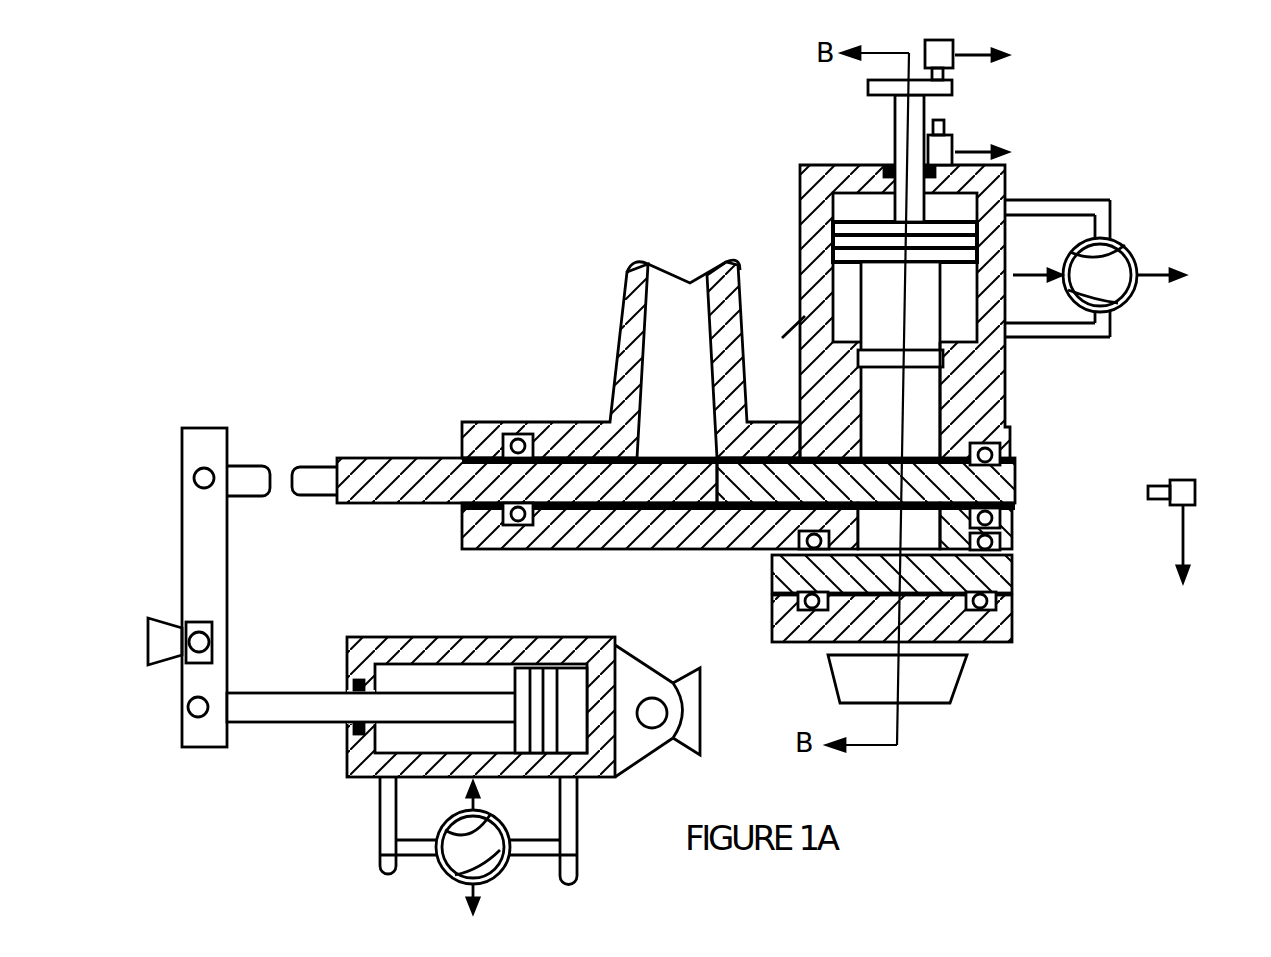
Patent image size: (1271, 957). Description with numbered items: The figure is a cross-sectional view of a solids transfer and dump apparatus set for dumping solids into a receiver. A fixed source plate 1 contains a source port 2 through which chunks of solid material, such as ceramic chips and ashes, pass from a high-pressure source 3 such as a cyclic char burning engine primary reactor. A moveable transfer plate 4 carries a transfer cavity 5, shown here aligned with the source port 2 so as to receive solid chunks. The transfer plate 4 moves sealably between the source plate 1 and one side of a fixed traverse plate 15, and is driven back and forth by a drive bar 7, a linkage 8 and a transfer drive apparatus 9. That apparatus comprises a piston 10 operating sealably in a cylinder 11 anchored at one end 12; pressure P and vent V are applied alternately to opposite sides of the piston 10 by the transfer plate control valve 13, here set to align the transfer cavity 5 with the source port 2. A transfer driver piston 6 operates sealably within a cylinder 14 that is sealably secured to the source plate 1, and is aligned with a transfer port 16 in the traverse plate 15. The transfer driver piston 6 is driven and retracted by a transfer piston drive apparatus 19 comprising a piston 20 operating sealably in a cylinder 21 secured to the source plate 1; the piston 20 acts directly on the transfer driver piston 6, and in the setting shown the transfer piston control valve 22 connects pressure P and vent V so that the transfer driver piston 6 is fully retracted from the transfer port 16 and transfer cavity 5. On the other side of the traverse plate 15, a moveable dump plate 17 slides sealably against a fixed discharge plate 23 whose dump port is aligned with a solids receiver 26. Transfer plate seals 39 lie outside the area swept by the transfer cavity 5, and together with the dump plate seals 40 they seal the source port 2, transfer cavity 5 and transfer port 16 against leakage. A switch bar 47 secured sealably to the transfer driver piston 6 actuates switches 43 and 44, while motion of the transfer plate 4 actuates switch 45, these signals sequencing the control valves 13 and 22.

The fixed source plate 1 is at (525, 430).
The source port 2 is at (670, 447).
The source 3 is at (677, 330).
The moveable transfer plate 4 is at (410, 470).
The transfer cavity 5 is at (665, 490).
The transfer driver piston 6 is at (918, 420).
The drive bar 7 is at (327, 472).
The linkage 8 is at (205, 575).
The transfer drive apparatus 9 is at (390, 640).
The piston 10 is at (540, 688).
The cylinder 11 is at (460, 668).
The anchored end 12 is at (655, 712).
The transfer plate control valve 13 is at (445, 840).
The cylinder 14 is at (972, 432).
The fixed traverse plate 15 is at (465, 530).
The transfer port 16 is at (950, 522).
The moveable dump plate 17 is at (985, 578).
The transfer piston drive apparatus 19 is at (797, 195).
The piston 20 is at (845, 243).
The cylinder 21 is at (780, 340).
The transfer piston control valve 22 is at (1112, 255).
The fixed discharge plate 23 is at (985, 622).
The solids receiver 26 is at (935, 690).
The transfer plate seals 39 is at (505, 440).
The dump plate seals 40 is at (797, 545).
The switch 43 is at (943, 57).
The switch 44 is at (938, 152).
The switch 45 is at (1183, 482).
The switch bar 47 is at (875, 88).